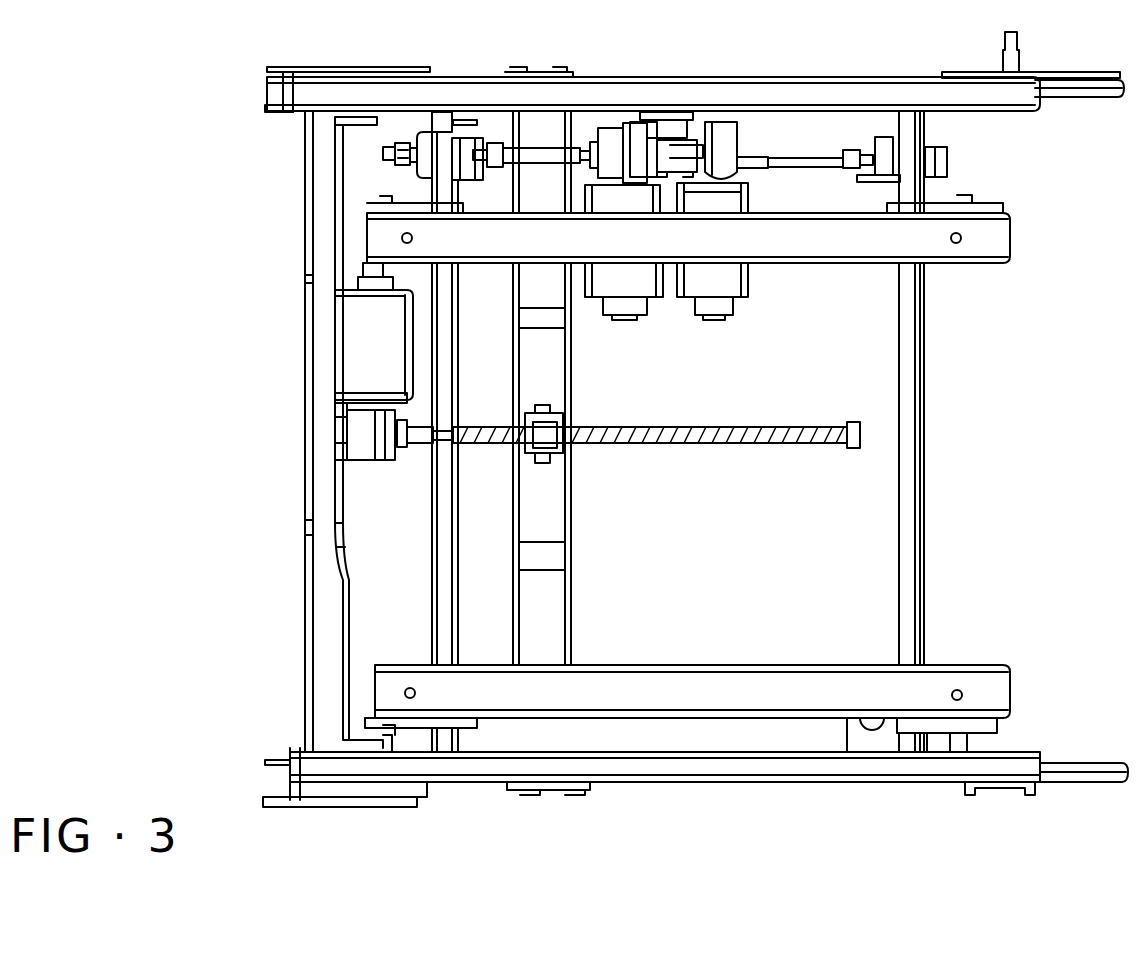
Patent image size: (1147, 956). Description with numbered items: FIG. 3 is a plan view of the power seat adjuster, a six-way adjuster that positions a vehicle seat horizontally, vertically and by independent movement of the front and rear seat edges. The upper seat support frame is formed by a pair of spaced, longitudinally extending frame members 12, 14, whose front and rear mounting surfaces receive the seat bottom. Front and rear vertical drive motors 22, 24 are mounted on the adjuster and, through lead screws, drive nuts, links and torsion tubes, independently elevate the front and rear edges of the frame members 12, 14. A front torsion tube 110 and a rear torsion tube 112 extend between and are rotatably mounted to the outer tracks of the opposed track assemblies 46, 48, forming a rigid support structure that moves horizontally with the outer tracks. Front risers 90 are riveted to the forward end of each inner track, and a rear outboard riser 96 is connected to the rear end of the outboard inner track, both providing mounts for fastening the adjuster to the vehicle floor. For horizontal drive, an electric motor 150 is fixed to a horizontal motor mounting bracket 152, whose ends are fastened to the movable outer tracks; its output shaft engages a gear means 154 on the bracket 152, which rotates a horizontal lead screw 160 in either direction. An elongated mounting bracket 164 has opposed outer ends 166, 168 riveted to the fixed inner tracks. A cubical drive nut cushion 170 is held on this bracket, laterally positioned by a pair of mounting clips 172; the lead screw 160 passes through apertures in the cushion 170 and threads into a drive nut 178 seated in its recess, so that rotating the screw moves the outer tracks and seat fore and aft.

The frame member 12 is at (910, 683).
The frame member 14 is at (930, 253).
The front vertical drive motor 22 is at (637, 287).
The rear vertical drive motor 24 is at (720, 283).
The track assembly 46 is at (318, 765).
The track assembly 48 is at (283, 99).
The front riser 90 is at (320, 67).
The rear outboard riser 96 is at (1015, 793).
The front torsion tube 110 is at (433, 568).
The rear torsion tube 112 is at (918, 492).
The electric motor 150 is at (345, 328).
The motor mounting bracket 152 is at (307, 373).
The gear means 154 is at (345, 462).
The horizontal lead screw 160 is at (487, 440).
The mounting bracket 164 is at (542, 578).
The outer end 166 is at (588, 792).
The outer end 168 is at (503, 72).
The drive nut cushion 170 is at (558, 448).
The mounting clips 172 is at (547, 400).
The drive nut 178 is at (545, 430).